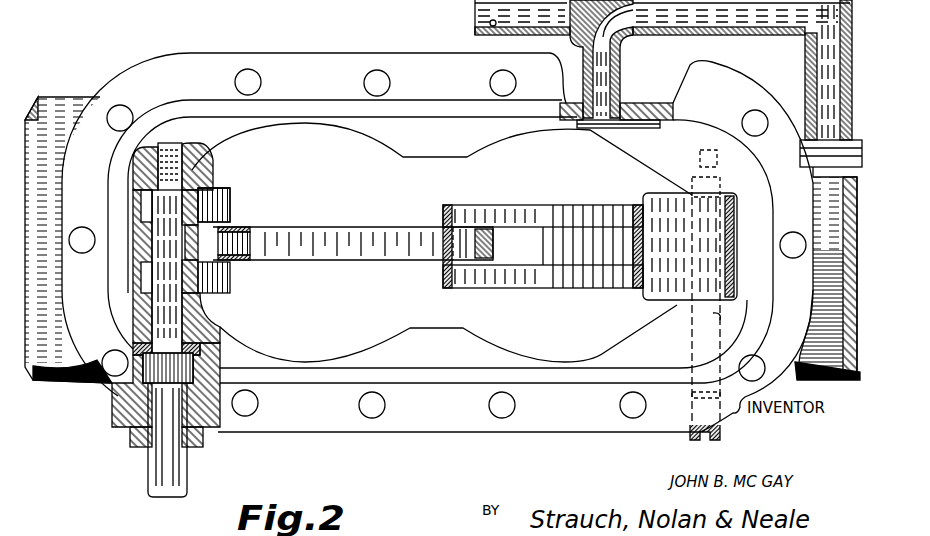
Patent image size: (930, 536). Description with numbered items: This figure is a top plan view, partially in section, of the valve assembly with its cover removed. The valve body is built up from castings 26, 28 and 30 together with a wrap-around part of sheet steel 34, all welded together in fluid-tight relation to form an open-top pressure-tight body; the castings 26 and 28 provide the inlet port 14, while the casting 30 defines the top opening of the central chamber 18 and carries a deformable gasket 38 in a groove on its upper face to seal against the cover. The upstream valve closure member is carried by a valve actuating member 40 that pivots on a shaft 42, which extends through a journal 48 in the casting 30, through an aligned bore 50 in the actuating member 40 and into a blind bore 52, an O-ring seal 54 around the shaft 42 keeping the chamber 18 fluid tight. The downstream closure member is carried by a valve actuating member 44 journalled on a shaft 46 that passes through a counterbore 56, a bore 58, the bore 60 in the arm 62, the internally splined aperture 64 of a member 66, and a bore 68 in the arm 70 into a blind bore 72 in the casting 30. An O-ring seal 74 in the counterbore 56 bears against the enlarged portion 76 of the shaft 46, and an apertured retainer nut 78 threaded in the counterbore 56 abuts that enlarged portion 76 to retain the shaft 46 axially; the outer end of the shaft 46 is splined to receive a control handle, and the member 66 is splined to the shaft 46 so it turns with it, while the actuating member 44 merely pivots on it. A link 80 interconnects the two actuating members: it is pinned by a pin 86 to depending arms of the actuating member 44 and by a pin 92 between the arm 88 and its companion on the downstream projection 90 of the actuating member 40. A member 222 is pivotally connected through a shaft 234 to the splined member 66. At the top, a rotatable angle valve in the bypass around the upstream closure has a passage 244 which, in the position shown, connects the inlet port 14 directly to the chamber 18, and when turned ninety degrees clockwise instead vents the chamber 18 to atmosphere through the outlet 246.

The inlet port 14 is at (831, 153).
The central chamber 18 is at (652, 103).
The casting 26 is at (797, 350).
The casting 28 is at (74, 384).
The casting 30 is at (540, 423).
The wrap around part of sheet steel 34 is at (337, 315).
The deformable gasket 38 is at (447, 103).
The valve actuating member 40 is at (650, 200).
The shaft 42 is at (690, 335).
The valve actuating member 44 is at (233, 198).
The shaft 46 is at (167, 343).
The journal 48 is at (745, 327).
The bore 50 is at (700, 247).
The blind bore 52 is at (694, 176).
The O-ring seal 54 is at (691, 398).
The counterbore 56 is at (193, 367).
The bore 58 is at (200, 340).
The bore 60 is at (190, 270).
The arm 62 is at (231, 289).
The internally splined aperture 64 is at (181, 241).
The member 66 is at (230, 212).
The bore 68 is at (205, 149).
The arm 70 is at (221, 191).
The blind bore 72 is at (176, 145).
The O-ring seal 74 is at (133, 349).
The enlarged portion 76 is at (161, 377).
The apertured retainer nut 78 is at (201, 449).
The link 80 is at (390, 225).
The pin 86 is at (552, 208).
The arm 88 is at (505, 290).
The downstream projection 90 is at (628, 284).
The pin 92 is at (441, 283).
The member 222 is at (251, 240).
The shaft 234 is at (244, 259).
The passage 244 is at (623, 42).
The outlet 246 is at (493, 30).